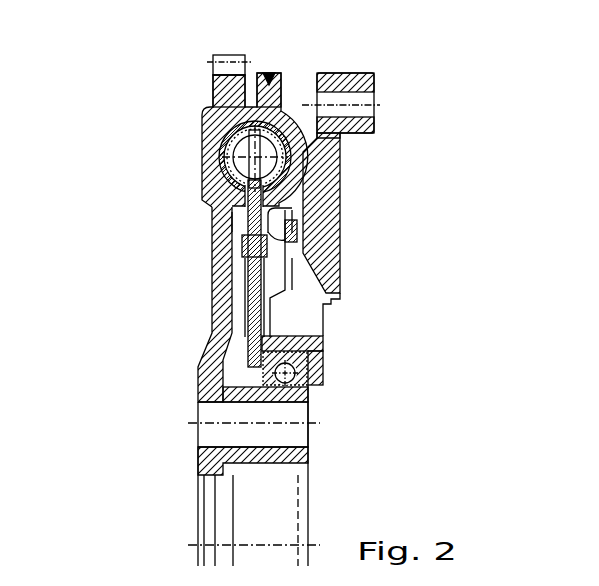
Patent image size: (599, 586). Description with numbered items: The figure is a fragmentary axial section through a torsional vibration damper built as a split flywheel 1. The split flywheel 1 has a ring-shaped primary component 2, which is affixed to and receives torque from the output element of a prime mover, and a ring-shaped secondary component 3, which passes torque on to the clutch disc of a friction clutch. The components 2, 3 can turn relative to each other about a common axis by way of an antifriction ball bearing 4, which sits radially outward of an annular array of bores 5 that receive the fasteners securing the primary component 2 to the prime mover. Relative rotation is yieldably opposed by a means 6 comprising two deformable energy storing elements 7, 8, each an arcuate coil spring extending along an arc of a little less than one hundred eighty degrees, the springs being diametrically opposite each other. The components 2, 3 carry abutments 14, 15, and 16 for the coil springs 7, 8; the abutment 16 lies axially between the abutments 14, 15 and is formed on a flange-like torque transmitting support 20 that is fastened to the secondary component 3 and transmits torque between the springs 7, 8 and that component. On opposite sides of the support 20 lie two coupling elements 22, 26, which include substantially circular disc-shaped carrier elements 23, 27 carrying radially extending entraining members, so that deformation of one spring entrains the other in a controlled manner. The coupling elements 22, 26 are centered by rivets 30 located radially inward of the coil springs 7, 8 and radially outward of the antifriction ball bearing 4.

The split flywheel 1 is at (330, 63).
The primary component 2 is at (213, 292).
The secondary component 3 is at (333, 248).
The antifriction ball bearing 4 is at (312, 388).
The bores 5 is at (289, 445).
The means for yieldably opposing angular movements 6 is at (215, 188).
The energy storing element 7 is at (255, 157).
The energy storing element 8 is at (227, 147).
The abutment 14 is at (208, 104).
The abutment 15 is at (292, 110).
The abutment 16 is at (233, 158).
The flange-like torque transmitting support 20 is at (252, 270).
The coupling element 22 is at (268, 221).
The carrier element 23 is at (227, 222).
The coupling element 26 is at (285, 226).
The carrier element 27 is at (300, 218).
The rivets 30 is at (298, 257).